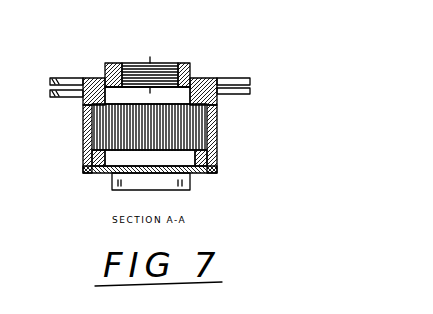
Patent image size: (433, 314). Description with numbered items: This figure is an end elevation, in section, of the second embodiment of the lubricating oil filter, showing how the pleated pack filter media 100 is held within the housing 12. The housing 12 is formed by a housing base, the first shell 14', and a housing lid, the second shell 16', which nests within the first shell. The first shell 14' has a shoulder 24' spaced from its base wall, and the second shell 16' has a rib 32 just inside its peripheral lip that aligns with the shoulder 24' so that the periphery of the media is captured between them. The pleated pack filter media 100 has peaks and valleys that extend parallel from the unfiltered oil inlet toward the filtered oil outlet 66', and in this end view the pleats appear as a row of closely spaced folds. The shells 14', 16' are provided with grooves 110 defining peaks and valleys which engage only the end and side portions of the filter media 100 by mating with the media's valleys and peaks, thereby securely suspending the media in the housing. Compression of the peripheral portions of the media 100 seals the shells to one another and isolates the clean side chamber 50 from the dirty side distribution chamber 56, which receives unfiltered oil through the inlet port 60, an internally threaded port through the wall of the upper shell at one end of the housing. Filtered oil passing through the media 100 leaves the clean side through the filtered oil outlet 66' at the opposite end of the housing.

The housing 12 is at (90, 76).
The first shell 14' is at (62, 139).
The second shell 16' is at (146, 49).
The shoulder 24' is at (151, 158).
The rib 32 is at (105, 95).
The clean side chamber 50 is at (219, 150).
The distribution chamber 56 is at (196, 76).
The unfiltered oil inlet port 60 is at (162, 63).
The filtered oil outlet 66' is at (190, 195).
The pleated pack filter media 100 is at (218, 128).
The grooves 110 is at (217, 108).